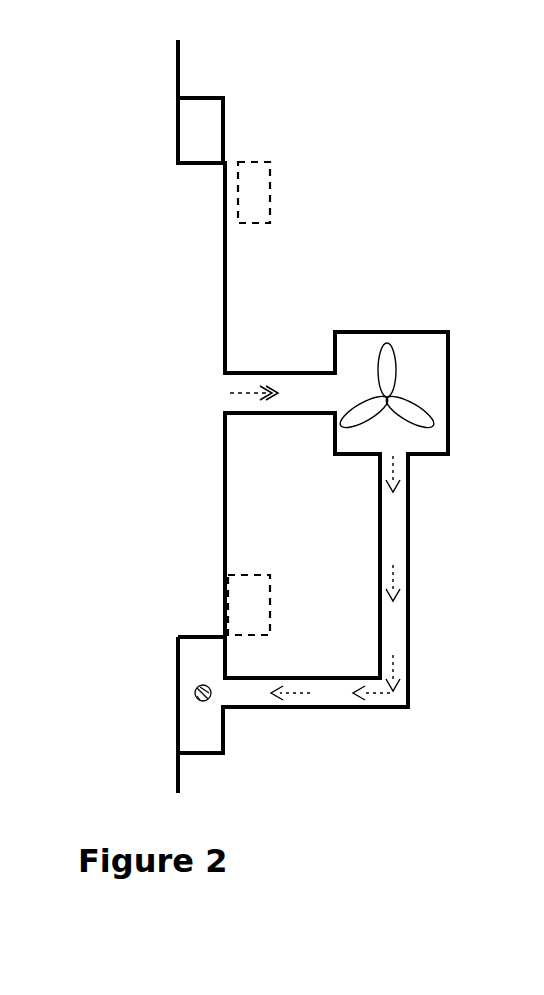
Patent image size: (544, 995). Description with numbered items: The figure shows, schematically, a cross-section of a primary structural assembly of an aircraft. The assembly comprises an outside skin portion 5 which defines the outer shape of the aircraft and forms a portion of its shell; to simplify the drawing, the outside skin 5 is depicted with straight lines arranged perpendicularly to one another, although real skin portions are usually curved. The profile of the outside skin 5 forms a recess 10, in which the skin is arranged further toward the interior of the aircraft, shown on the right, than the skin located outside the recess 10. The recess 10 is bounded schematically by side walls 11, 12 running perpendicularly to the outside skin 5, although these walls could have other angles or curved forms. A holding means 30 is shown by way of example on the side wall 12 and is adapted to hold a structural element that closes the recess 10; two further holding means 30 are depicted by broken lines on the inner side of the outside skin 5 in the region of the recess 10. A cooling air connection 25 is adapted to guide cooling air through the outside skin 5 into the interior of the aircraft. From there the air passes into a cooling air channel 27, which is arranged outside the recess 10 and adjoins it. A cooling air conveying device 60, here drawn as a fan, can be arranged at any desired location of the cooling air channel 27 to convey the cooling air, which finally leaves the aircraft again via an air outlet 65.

The recess 10 is at (160, 285).
The outside skin portion 5 is at (180, 58).
The side wall 12 is at (193, 166).
The holding means 30 is at (212, 127).
The cooling air connection 25 is at (215, 398).
The cooling air channel 27 is at (296, 371).
The cooling air conveying device 60 is at (410, 357).
The side wall 11 is at (197, 636).
The air outlet 65 is at (203, 753).